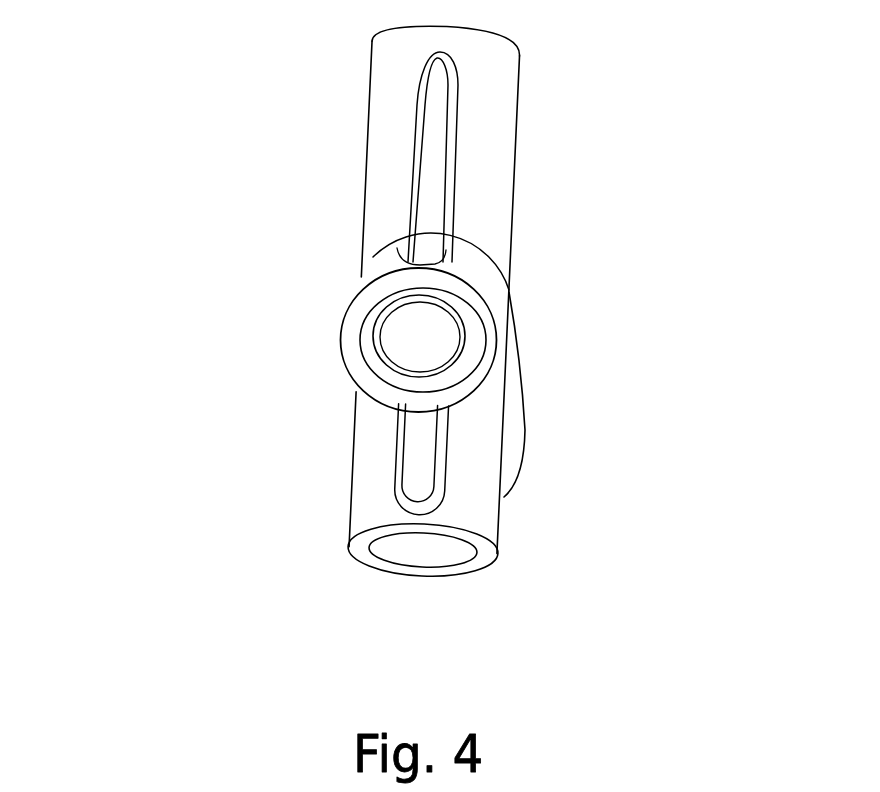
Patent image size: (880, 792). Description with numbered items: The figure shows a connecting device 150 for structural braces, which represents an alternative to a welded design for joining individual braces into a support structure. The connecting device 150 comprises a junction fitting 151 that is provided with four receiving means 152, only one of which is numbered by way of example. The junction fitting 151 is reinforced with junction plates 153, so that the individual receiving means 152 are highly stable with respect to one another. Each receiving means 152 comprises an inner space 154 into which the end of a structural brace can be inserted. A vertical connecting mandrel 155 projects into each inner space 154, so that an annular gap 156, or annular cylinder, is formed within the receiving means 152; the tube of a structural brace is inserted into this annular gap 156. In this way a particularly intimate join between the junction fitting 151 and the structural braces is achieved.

The connecting device 150 is at (398, 301).
The junction fitting 151 is at (552, 192).
The receiving means 152 is at (487, 293).
The junction plates 153 is at (433, 151).
The inner space 154 is at (340, 403).
The vertical connecting mandrel 155 is at (430, 327).
The annular gap 156 is at (360, 343).